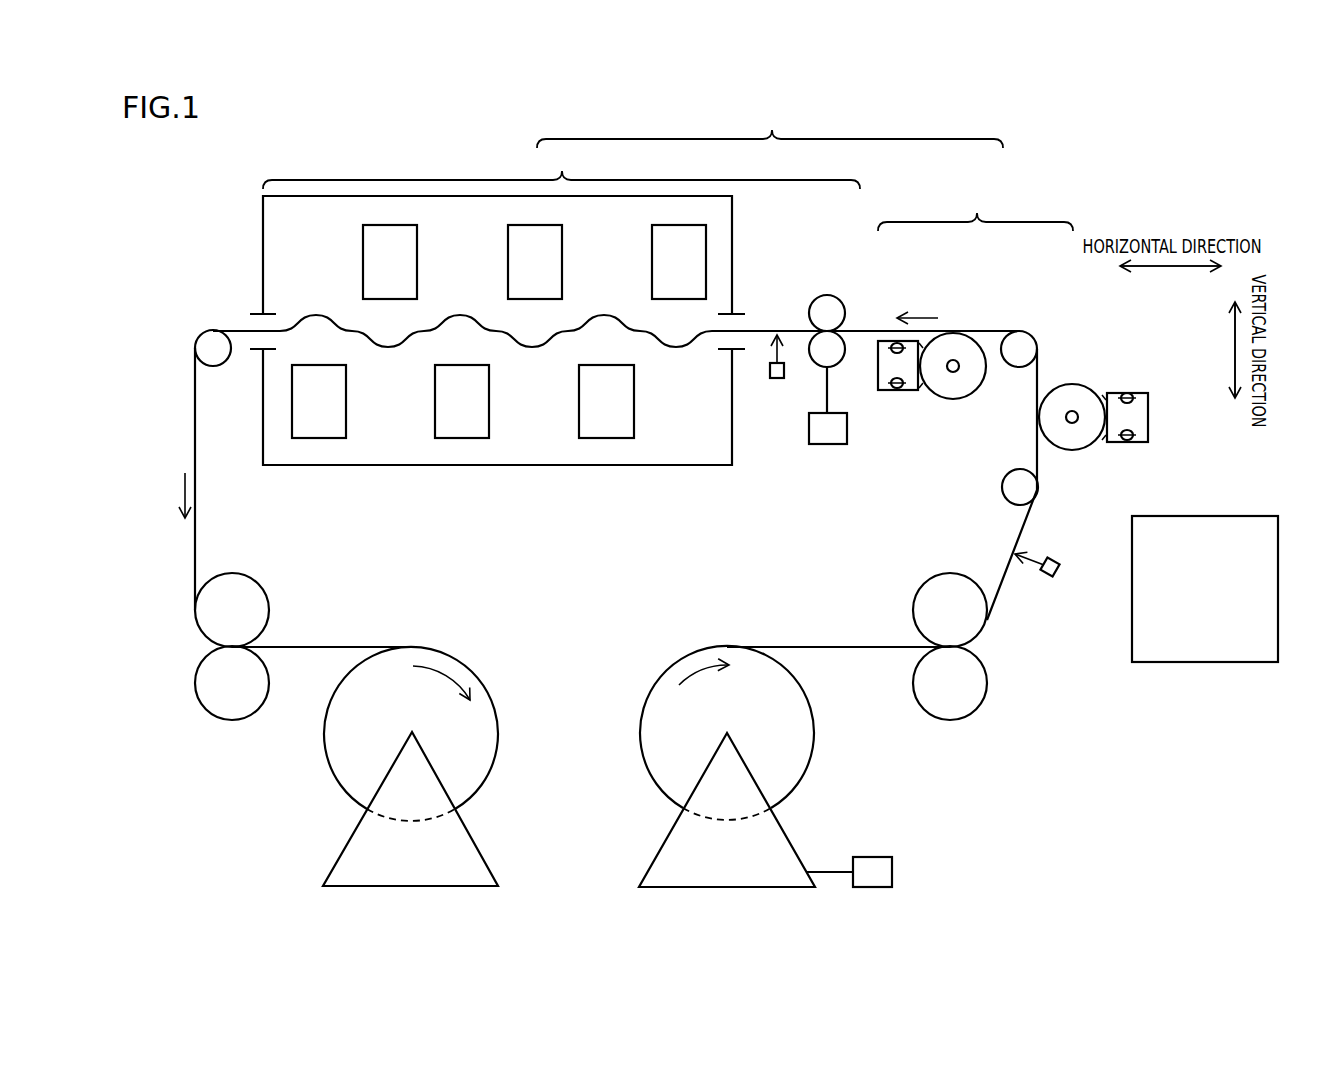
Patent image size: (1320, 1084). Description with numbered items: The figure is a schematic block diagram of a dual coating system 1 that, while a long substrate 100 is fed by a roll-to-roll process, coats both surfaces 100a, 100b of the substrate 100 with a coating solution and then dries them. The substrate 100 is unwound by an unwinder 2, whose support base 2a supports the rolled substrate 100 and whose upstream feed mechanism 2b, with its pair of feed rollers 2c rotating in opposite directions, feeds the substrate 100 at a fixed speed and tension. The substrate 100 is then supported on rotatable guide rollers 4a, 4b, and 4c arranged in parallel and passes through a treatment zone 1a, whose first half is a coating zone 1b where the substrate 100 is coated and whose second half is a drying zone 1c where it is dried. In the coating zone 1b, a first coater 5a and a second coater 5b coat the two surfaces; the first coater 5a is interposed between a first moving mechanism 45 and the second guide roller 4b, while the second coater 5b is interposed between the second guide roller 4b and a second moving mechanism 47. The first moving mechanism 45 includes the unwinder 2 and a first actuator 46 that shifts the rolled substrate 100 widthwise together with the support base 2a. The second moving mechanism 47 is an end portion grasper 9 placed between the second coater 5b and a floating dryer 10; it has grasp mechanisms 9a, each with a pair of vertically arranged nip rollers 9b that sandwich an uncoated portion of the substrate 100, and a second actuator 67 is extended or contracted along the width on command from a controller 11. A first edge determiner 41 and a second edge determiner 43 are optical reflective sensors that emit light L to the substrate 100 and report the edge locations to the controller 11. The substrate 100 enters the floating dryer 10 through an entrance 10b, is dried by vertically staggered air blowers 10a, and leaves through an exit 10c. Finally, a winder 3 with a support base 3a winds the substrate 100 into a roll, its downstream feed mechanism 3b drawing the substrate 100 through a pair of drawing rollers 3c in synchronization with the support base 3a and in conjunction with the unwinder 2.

The dual coating system 1 is at (1110, 208).
The treatment zone 1a is at (770, 126).
The coating zone 1b is at (975, 207).
The drying zone 1c is at (561, 166).
The unwinder 2 is at (851, 730).
The support base 2a is at (794, 843).
The upstream feed mechanism 2b is at (917, 698).
The pair of feed rollers 2c is at (975, 682).
The winder 3 is at (335, 729).
The support base 3a is at (488, 838).
The downstream feed mechanism 3b is at (262, 706).
The pair of drawing rollers 3c is at (215, 682).
The guide roller 4a is at (1002, 487).
The guide roller 4b is at (1031, 333).
The guide roller 4c is at (206, 334).
The first coater 5a is at (1130, 392).
The second coater 5b is at (884, 393).
The end portion grasper 9 is at (842, 297).
The grasp mechanism 9a is at (831, 296).
The nip rollers 9b is at (838, 344).
The floating dryer 10 is at (500, 364).
The air blowers 10a is at (556, 262).
The entrance 10b is at (745, 344).
The exit 10c is at (250, 326).
The controller 11 is at (1212, 516).
The first edge determiner 41 is at (1060, 558).
The second edge determiner 43 is at (787, 378).
The first moving mechanism 45 is at (832, 772).
The first actuator 46 is at (876, 857).
The second moving mechanism 47 is at (806, 303).
The second actuator 67 is at (838, 446).
The substrate 100 is at (1007, 580).
The surface 100a is at (1038, 468).
The surface 100b is at (1038, 452).
The light L is at (772, 352).